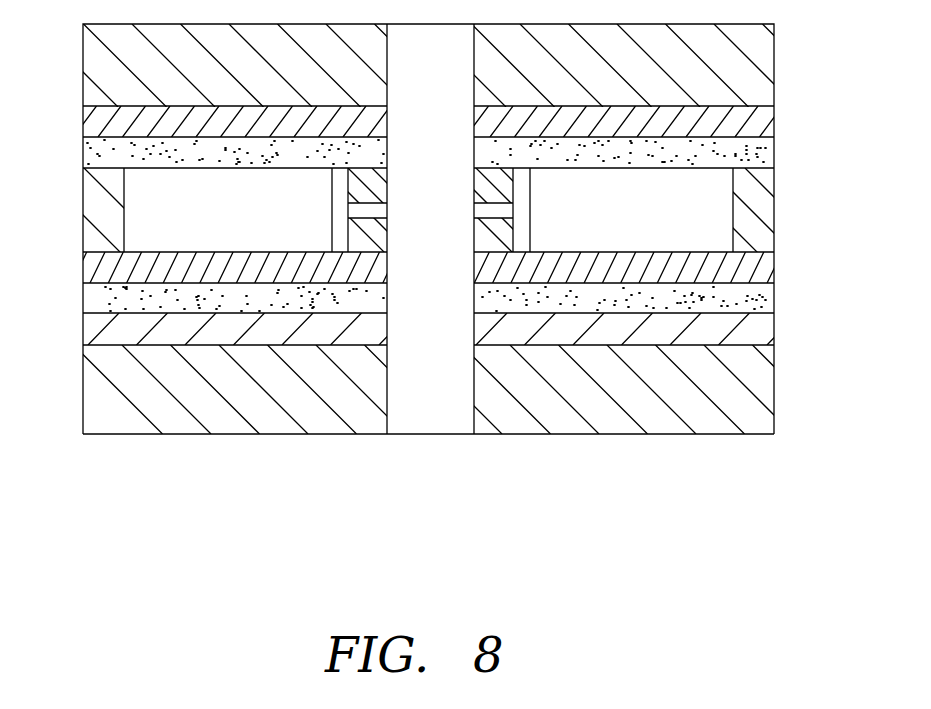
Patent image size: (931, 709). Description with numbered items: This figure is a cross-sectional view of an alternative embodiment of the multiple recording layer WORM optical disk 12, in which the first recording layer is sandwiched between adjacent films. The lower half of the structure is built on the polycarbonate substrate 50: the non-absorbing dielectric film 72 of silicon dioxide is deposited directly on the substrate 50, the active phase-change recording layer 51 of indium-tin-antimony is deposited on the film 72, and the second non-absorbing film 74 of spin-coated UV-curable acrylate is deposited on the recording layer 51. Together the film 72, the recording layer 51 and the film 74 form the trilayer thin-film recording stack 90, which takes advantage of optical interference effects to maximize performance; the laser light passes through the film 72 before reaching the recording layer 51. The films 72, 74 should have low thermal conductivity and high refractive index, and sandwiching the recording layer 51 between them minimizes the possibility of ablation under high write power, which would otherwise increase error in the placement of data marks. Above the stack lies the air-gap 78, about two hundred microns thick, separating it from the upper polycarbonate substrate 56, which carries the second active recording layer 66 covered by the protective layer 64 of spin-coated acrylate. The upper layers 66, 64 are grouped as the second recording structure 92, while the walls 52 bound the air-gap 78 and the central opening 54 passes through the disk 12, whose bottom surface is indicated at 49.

The optical disk 12 is at (217, 476).
The bottom surface of lower body 49 is at (675, 435).
The substrate 50 is at (760, 378).
The active recording layer 51 is at (760, 290).
The right side wall 52 is at (760, 203).
The central passage 54 is at (484, 232).
The substrate 56 is at (760, 63).
The protective layer 64 is at (760, 147).
The second active recording layer 66 is at (760, 120).
The dielectric film 72 is at (760, 327).
The non-absorbing film 74 is at (760, 259).
The air-gap 78 is at (124, 206).
The trilayer thin-film recording stack 90 is at (436, 298).
The upper laminate 92 is at (439, 134).